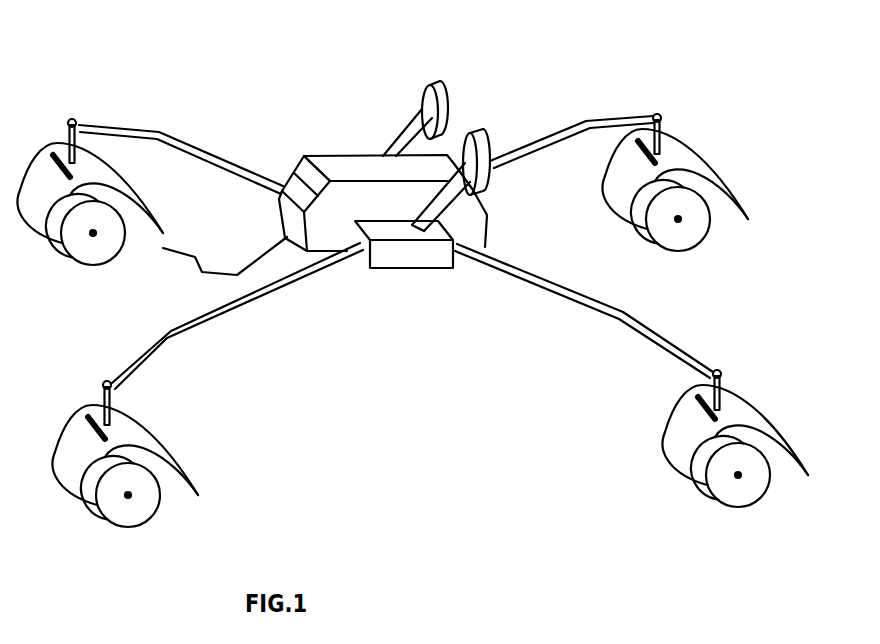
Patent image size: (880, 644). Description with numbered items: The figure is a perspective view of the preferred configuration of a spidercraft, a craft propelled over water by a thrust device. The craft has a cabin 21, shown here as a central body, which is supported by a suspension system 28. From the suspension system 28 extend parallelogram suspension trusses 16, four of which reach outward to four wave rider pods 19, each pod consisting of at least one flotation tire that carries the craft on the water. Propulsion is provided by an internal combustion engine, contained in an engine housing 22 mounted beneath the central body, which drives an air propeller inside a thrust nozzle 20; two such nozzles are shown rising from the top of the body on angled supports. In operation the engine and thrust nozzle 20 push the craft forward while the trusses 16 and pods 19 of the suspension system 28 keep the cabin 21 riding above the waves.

The parallelogram suspension trusses 16 is at (237, 337).
The wave rider pod 19 is at (760, 482).
The thrust nozzle 20 is at (376, 82).
The cabin 21 is at (163, 248).
The engine housing 22 is at (382, 273).
The suspension system 28 is at (332, 147).